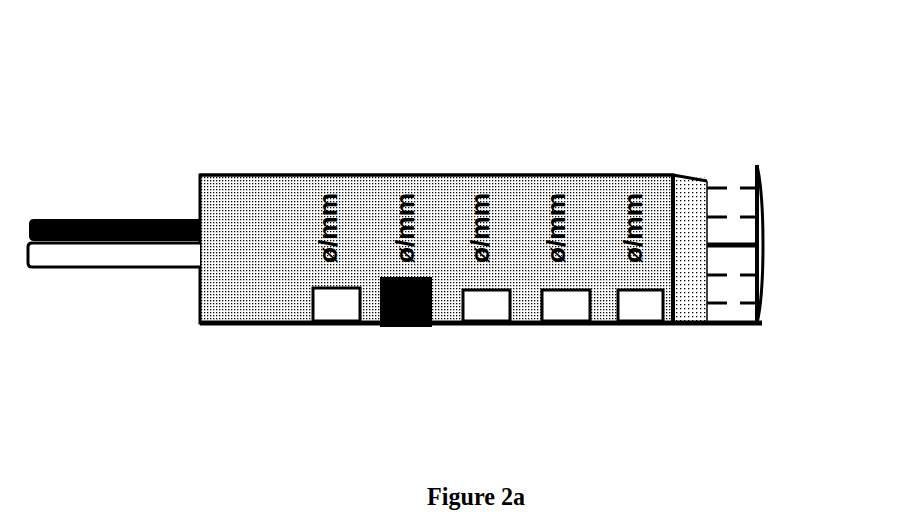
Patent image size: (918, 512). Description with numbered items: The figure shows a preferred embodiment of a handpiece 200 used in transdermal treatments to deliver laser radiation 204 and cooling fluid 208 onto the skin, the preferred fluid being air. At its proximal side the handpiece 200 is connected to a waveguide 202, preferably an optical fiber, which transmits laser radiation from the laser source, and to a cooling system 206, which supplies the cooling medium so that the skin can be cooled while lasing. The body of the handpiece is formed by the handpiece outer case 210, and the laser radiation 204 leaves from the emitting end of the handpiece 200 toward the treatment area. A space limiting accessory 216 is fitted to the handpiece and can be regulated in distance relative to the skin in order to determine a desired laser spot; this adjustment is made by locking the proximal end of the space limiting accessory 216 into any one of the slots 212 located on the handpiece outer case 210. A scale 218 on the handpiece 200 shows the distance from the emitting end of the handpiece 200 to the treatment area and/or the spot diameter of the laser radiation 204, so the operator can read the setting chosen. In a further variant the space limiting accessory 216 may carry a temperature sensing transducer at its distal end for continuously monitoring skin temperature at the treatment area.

The handpiece 200 is at (209, 36).
The waveguide 202 is at (114, 281).
The laser radiation 204 is at (745, 182).
The cooling system 206 is at (115, 199).
The cooling fluid 208 is at (745, 242).
The handpiece outer case 210 is at (453, 170).
The slots 212 is at (380, 330).
The space limiting accessory 216 is at (590, 333).
The scale 218 is at (305, 215).